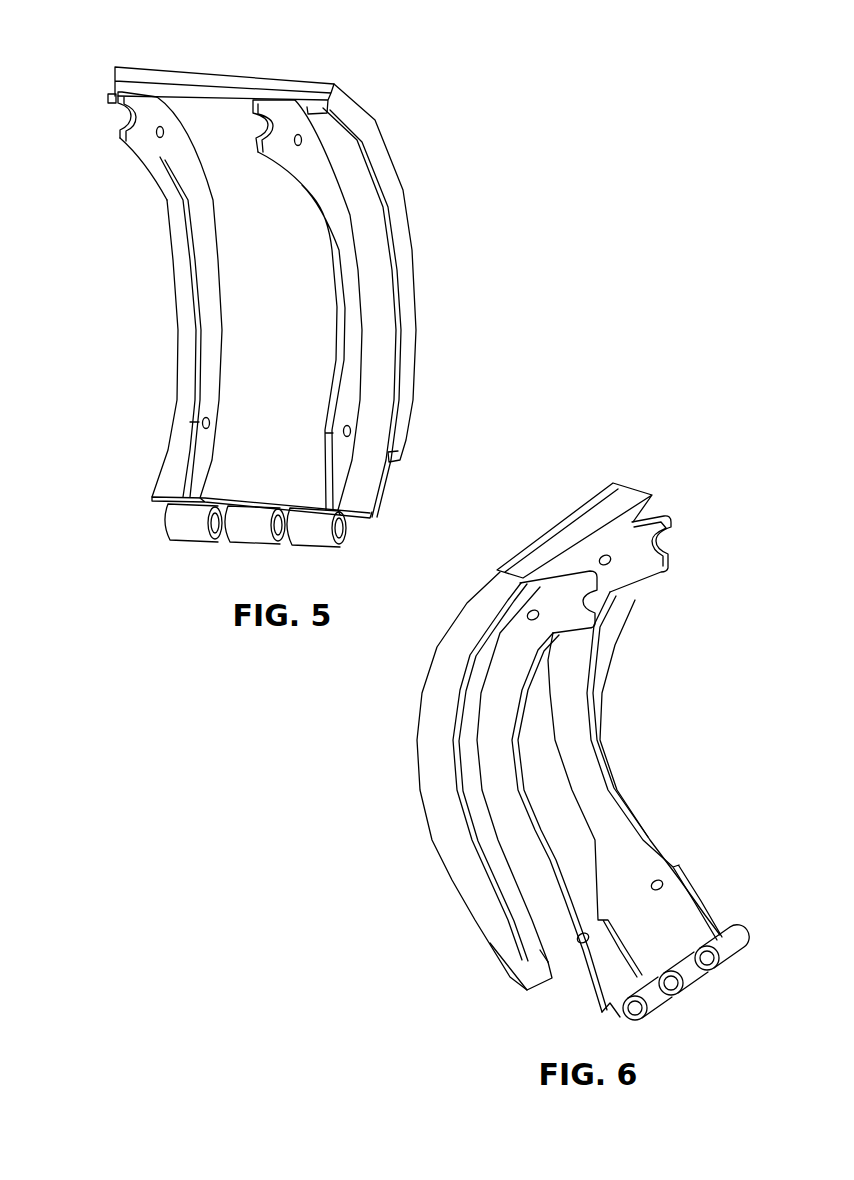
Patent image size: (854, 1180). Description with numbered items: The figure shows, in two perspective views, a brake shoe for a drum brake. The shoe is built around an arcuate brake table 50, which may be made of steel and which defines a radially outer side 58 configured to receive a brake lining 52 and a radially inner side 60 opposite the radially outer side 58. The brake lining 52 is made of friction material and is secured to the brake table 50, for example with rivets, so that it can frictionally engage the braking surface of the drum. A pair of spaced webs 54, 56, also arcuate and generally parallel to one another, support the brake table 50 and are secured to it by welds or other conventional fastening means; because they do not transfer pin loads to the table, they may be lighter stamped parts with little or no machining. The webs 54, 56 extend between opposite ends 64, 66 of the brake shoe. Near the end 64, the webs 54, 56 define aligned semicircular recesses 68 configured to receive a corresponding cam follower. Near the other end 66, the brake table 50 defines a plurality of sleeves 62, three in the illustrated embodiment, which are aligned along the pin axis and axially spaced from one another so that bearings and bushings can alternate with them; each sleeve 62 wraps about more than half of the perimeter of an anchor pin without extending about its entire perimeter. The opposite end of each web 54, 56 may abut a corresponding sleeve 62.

In FIG. 5, the brake table 50 is at (258, 230).
In FIG. 6, the brake table 50 is at (547, 797).
In FIG. 5, the brake lining 52 is at (378, 148).
In FIG. 6, the brake lining 52 is at (433, 730).
In FIG. 5, the web 54 is at (215, 298).
In FIG. 6, the web 54 is at (530, 872).
In FIG. 5, the web 56 is at (353, 318).
In FIG. 6, the web 56 is at (563, 692).
In FIG. 5, the radially outer side 58 is at (397, 250).
In FIG. 6, the radially outer side 58 is at (455, 800).
In FIG. 5, the radially inner side 60 is at (185, 357).
In FIG. 6, the radially inner side 60 is at (535, 932).
In FIG. 5, the sleeve 62 is at (189, 522).
In FIG. 6, the sleeve 62 is at (657, 1002).
In FIG. 5, the end 64 is at (100, 76).
In FIG. 6, the end 64 is at (690, 518).
In FIG. 5, the end 66 is at (145, 495).
In FIG. 6, the end 66 is at (738, 930).
In FIG. 5, the semicircular recess 68 is at (118, 110).
In FIG. 6, the semicircular recess 68 is at (672, 537).